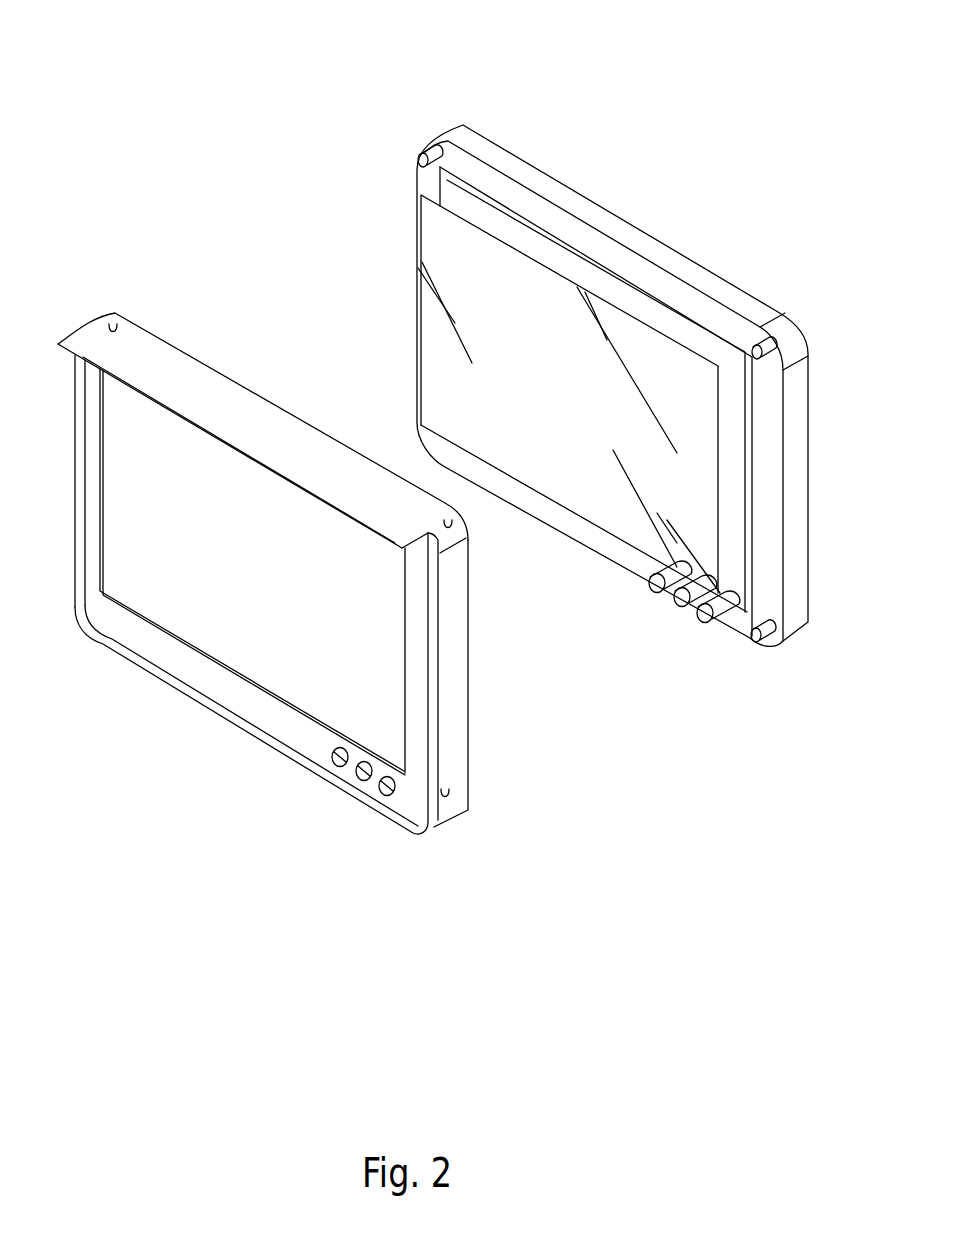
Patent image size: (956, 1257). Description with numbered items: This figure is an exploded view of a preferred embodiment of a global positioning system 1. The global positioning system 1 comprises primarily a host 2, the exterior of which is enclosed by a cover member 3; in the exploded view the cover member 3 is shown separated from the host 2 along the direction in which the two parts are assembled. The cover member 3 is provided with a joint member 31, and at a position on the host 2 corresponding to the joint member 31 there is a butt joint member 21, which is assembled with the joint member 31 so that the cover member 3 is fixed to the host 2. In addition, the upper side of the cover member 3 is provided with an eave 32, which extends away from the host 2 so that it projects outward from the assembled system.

The global positioning system 1 is at (640, 830).
The host 2 is at (565, 262).
The butt joint member 21 is at (426, 152).
The cover member 3 is at (455, 716).
The joint member 31 is at (452, 805).
The eave 32 is at (62, 342).